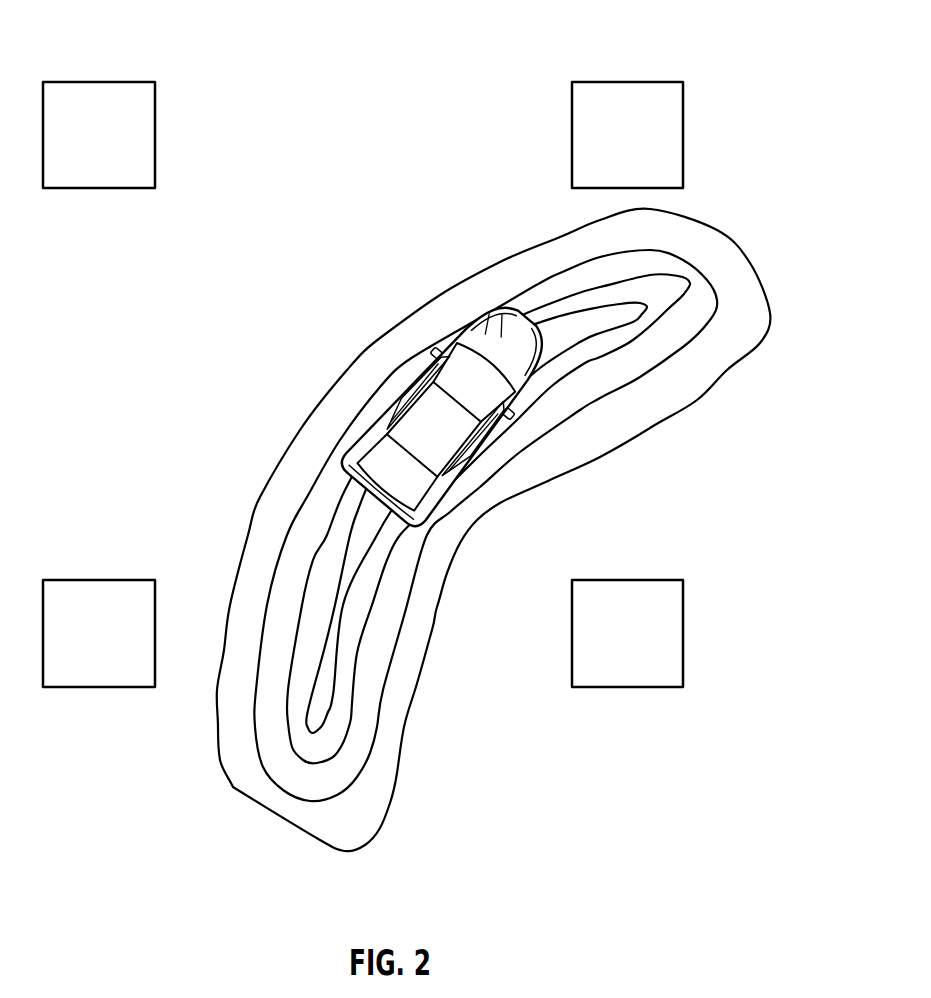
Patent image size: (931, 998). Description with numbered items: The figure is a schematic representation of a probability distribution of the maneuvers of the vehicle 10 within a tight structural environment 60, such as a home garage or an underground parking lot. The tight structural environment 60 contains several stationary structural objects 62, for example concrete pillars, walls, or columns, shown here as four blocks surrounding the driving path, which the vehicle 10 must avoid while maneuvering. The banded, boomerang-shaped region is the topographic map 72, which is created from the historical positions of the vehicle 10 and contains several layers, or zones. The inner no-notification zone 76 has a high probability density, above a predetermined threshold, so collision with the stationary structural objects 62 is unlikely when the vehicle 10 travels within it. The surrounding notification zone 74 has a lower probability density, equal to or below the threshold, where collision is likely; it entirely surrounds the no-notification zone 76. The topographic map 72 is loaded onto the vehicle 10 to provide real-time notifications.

The vehicle 10 is at (522, 365).
The tight structural environment 60 is at (518, 524).
The stationary structural objects 62 is at (98, 82).
The topographic map 72 is at (347, 358).
The notification zone 74 is at (735, 342).
The no-notification zone 76 is at (252, 747).